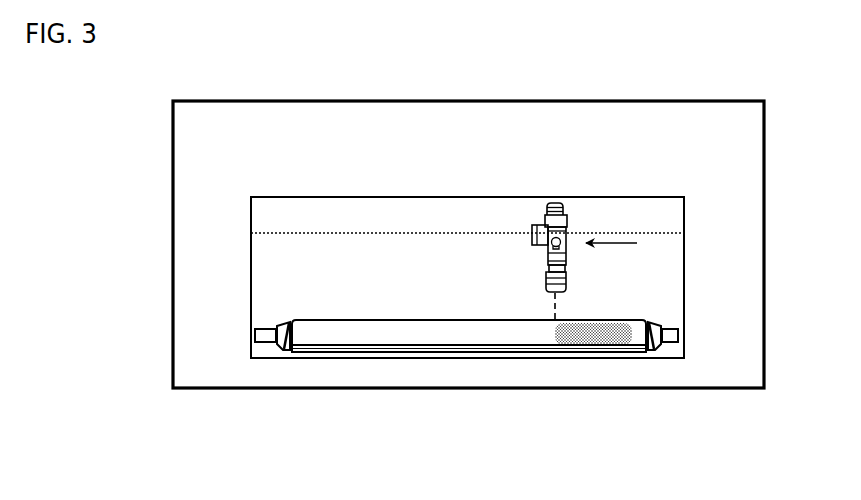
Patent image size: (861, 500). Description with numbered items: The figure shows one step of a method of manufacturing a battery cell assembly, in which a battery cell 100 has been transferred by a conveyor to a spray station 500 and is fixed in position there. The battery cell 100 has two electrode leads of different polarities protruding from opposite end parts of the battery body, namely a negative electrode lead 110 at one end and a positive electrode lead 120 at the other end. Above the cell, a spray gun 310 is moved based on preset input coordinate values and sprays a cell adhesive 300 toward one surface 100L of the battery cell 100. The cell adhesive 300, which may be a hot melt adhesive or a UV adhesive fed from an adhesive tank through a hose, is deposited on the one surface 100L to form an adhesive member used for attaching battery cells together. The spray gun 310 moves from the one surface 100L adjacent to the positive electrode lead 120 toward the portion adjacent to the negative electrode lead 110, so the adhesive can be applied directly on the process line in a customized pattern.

The battery cell 100 is at (318, 316).
The one surface of the battery cell 100L is at (365, 338).
The negative electrode lead 110 is at (255, 336).
The positive electrode lead 120 is at (678, 337).
The cell adhesive 300 is at (610, 340).
The spray gun 310 is at (558, 197).
The spray station 500 is at (431, 389).